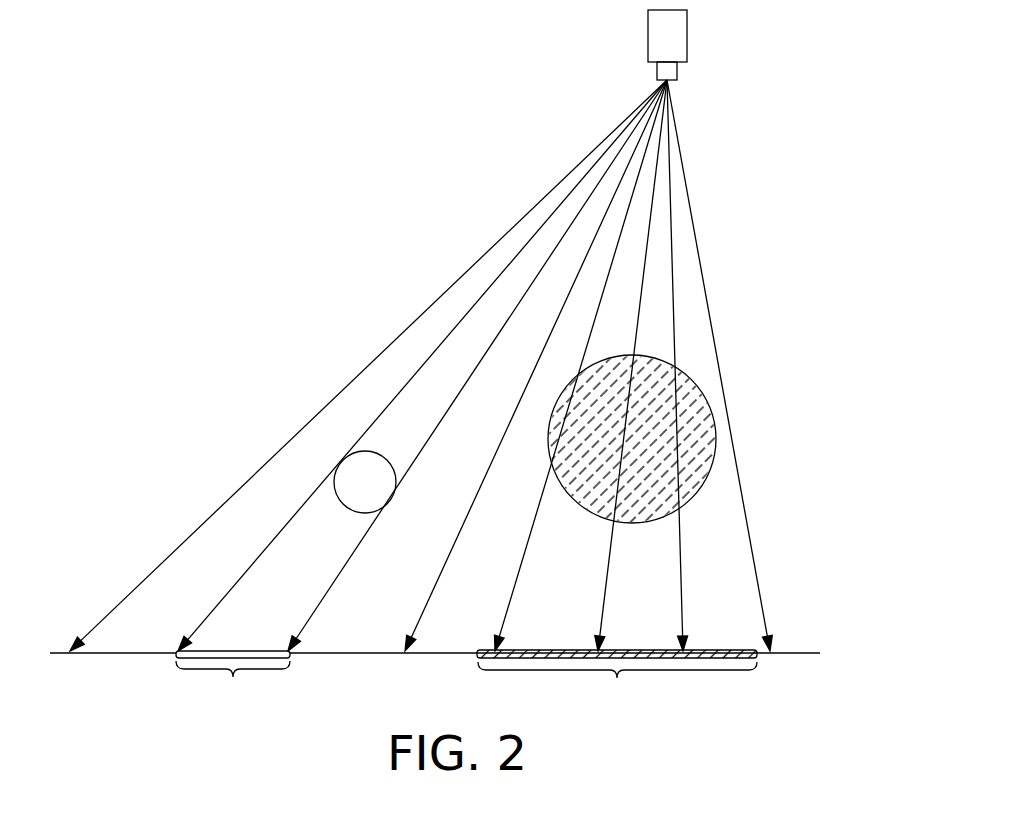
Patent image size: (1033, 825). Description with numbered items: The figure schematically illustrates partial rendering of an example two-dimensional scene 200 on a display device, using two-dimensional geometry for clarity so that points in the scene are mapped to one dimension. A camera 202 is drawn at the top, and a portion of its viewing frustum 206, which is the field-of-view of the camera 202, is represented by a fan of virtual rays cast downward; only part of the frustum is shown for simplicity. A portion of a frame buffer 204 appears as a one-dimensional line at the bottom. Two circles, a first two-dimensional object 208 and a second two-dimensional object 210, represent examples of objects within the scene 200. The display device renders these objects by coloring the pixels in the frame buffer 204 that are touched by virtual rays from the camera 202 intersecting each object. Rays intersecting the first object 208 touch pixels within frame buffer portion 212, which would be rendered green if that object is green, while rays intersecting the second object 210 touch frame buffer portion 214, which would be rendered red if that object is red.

The 2D scene 200 is at (187, 143).
The camera 202 is at (687, 33).
The frame buffer 204 is at (92, 654).
The viewing frustum 206 is at (480, 223).
The 2D object 208 is at (394, 471).
The 2D object 210 is at (716, 428).
The frame buffer portion 212 is at (233, 678).
The frame buffer portion 214 is at (617, 678).